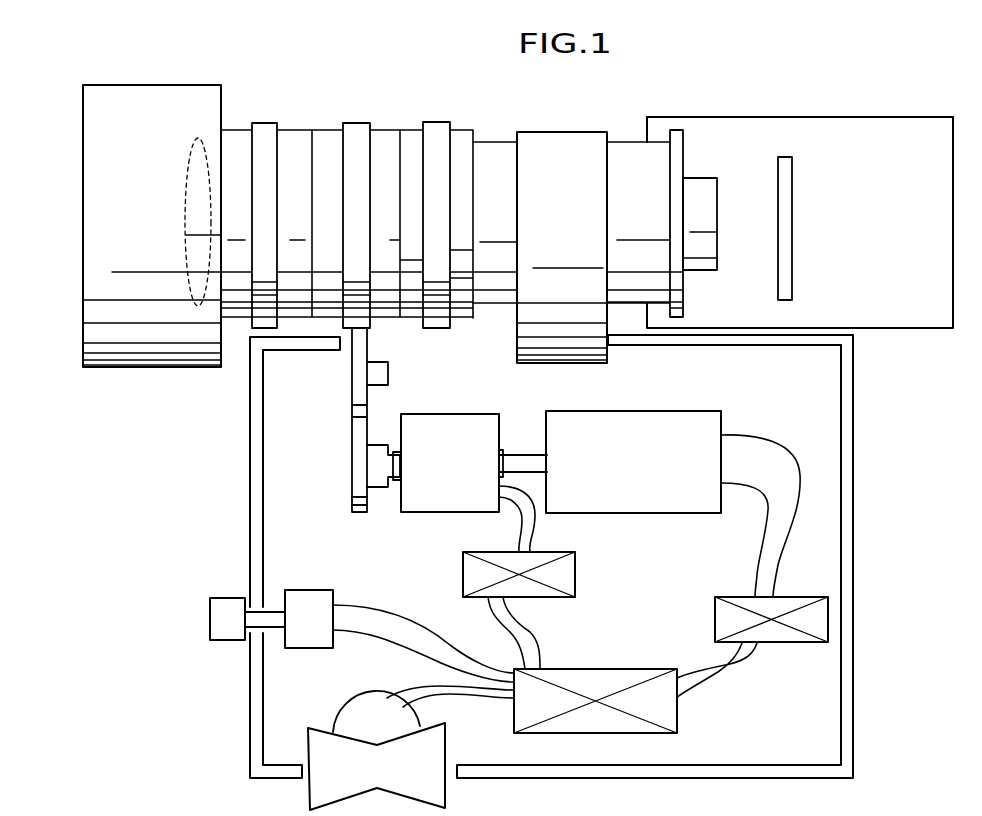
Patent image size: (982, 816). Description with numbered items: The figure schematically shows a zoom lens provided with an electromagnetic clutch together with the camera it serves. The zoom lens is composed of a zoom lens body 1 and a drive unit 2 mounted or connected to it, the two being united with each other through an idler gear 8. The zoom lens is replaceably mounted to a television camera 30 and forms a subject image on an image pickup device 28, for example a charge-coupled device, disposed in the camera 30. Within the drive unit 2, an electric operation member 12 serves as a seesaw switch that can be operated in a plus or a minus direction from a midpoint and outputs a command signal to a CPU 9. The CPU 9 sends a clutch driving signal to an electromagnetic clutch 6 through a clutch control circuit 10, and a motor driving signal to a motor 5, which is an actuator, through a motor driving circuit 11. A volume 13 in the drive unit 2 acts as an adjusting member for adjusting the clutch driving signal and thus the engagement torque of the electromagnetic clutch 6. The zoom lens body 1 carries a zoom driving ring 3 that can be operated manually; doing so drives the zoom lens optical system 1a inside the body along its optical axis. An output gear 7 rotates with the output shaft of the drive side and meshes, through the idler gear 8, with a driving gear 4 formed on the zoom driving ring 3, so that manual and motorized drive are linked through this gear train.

The zoom lens body 1 is at (138, 87).
The zoom lens optical system 1a is at (207, 127).
The drive unit 2 is at (256, 447).
The zoom driving ring 3 is at (325, 128).
The driving gear 4 is at (357, 123).
The motor 5 is at (647, 419).
The electromagnetic clutch 6 is at (429, 512).
The output gear 7 is at (357, 481).
The idler gear 8 is at (357, 373).
The CPU 9 is at (680, 713).
The clutch control circuit 10 is at (577, 573).
The motor driving circuit 11 is at (718, 617).
The electric operation member 12 is at (318, 735).
The volume 13 is at (212, 612).
The image pickup device 28 is at (793, 217).
The television camera 30 is at (896, 125).